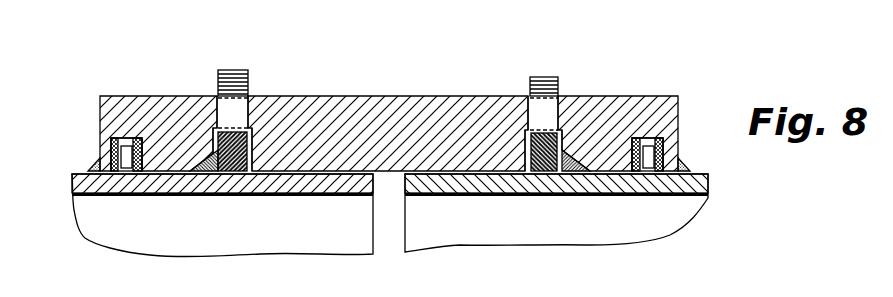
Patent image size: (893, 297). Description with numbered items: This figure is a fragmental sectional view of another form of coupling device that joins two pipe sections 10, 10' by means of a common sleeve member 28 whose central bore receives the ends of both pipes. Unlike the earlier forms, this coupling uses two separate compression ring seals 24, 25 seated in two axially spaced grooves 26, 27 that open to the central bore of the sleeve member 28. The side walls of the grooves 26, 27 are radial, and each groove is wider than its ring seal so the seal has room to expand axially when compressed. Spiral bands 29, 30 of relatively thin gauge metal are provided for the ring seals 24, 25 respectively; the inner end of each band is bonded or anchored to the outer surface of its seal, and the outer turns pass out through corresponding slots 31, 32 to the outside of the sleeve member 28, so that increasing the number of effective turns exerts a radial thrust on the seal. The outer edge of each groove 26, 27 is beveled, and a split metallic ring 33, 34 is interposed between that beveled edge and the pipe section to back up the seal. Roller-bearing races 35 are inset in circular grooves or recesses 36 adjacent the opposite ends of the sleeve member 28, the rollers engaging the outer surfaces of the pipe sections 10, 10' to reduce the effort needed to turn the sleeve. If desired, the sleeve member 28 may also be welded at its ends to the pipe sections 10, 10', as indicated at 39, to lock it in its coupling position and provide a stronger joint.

The pipe section 10 is at (222, 215).
The pipe section 10' is at (556, 213).
The compression ring seal 24 is at (240, 177).
The compression ring seal 25 is at (548, 173).
The groove 26 is at (253, 148).
The groove 27 is at (530, 166).
The sleeve member 28 is at (666, 101).
The spiral band 29 is at (233, 69).
The spiral band 30 is at (547, 76).
The slot 31 is at (222, 108).
The slot 32 is at (531, 108).
The split metallic ring 33 is at (207, 175).
The split metallic ring 34 is at (585, 178).
The roller-bearing race 35 is at (124, 150).
The circular groove or recess 36 is at (157, 163).
The weld 39 is at (100, 170).